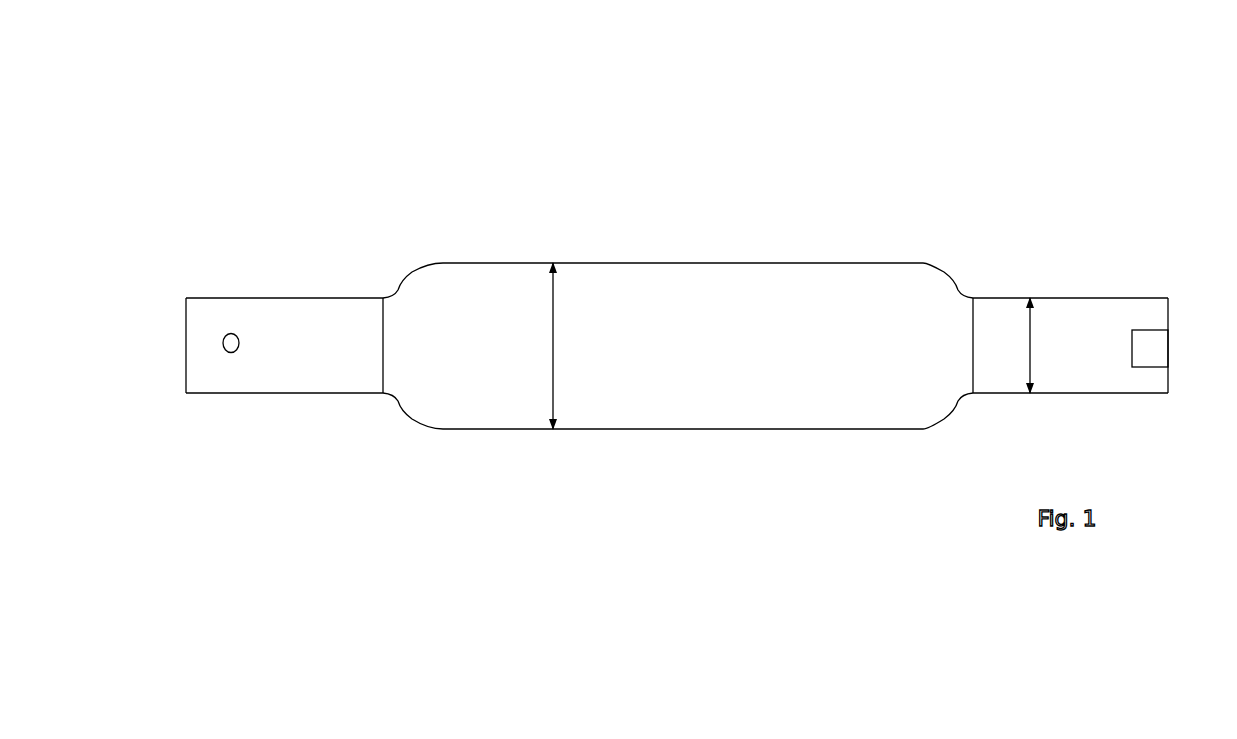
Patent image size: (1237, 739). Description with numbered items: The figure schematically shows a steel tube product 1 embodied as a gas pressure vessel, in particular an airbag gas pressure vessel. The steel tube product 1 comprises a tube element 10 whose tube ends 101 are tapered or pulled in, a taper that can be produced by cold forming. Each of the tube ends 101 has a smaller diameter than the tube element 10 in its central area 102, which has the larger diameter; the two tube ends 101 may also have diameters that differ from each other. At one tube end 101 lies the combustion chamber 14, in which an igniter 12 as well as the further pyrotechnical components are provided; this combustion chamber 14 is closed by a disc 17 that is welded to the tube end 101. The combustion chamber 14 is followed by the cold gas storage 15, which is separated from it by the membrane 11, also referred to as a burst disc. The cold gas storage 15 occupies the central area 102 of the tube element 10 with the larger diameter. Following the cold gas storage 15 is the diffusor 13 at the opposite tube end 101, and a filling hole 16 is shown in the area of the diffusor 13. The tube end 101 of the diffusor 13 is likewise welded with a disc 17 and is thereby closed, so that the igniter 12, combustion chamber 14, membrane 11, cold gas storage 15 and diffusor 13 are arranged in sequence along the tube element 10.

The steel tube product 1 is at (552, 147).
The tube element 10 is at (708, 237).
The membrane 11 is at (970, 342).
The igniter 12 is at (1152, 353).
The diffusor 13 is at (347, 320).
The combustion chamber 14 is at (1072, 320).
The cold gas storage 15 is at (708, 397).
The filling hole 16 is at (235, 352).
The disc 17 is at (186, 328).
The tube ends 101 is at (313, 412).
The central area 102 is at (497, 260).